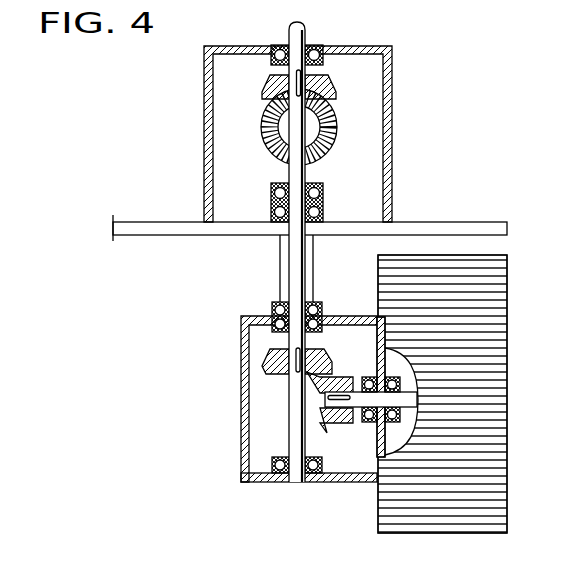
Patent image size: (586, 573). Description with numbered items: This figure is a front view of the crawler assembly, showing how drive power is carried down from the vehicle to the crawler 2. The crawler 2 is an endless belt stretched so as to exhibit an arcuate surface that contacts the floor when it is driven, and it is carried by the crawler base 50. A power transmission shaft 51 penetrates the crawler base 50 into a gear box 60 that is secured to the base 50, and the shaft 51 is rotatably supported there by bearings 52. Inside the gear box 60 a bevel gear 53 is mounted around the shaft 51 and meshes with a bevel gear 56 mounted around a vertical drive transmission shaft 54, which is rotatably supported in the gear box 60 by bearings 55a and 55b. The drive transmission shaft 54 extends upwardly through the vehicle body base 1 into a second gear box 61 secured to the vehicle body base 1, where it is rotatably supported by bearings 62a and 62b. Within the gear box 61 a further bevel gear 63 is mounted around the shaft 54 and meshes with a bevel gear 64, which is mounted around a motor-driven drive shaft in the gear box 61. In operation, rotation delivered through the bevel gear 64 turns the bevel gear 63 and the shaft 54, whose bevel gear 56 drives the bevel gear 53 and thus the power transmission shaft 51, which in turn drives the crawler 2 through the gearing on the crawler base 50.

The vehicle body base 1 is at (449, 222).
The crawler 2 is at (498, 401).
The crawler base 50 is at (377, 356).
The power transmission shaft 51 is at (358, 398).
The bearings 52 is at (369, 422).
The bevel gear 53 is at (336, 482).
The drive transmission shaft 54 is at (296, 34).
The bearing 55a is at (276, 473).
The bearing 55b is at (272, 306).
The bevel gear 56 is at (270, 368).
The gear box 60 is at (241, 342).
The gear box 61 is at (205, 94).
The bearing 62a is at (273, 197).
The bearing 62b is at (317, 50).
The bevel gear 63 is at (330, 96).
The bevel gear 64 is at (333, 143).